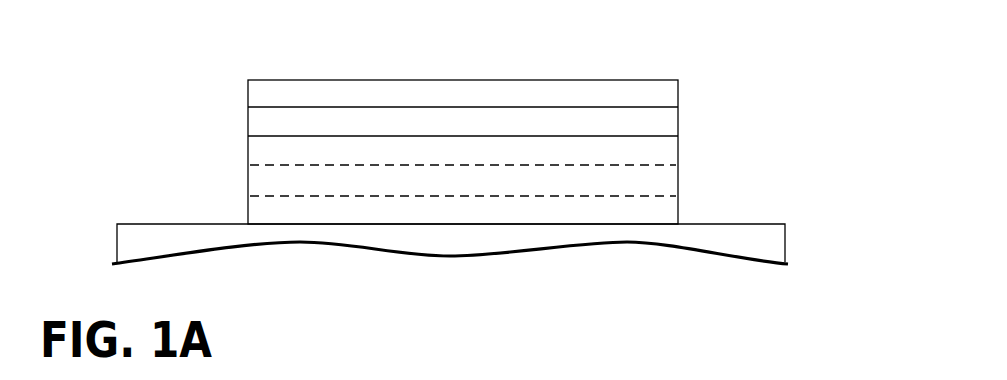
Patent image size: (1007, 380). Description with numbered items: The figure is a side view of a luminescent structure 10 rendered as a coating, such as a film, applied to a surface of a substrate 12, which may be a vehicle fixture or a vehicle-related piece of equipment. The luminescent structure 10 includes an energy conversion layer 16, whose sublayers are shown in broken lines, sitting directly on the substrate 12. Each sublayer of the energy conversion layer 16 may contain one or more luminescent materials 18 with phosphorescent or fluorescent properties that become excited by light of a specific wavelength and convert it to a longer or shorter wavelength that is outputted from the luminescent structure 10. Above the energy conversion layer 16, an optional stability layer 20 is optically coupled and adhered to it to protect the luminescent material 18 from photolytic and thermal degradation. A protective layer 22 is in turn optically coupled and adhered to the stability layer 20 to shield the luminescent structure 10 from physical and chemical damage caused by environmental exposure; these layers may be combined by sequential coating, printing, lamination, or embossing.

The luminescent structure 10 is at (450, 138).
The substrate 12 is at (725, 222).
The energy conversion layer 16 is at (248, 178).
The luminescent material 18 is at (630, 182).
The stability layer 20 is at (248, 125).
The protective layer 22 is at (345, 80).